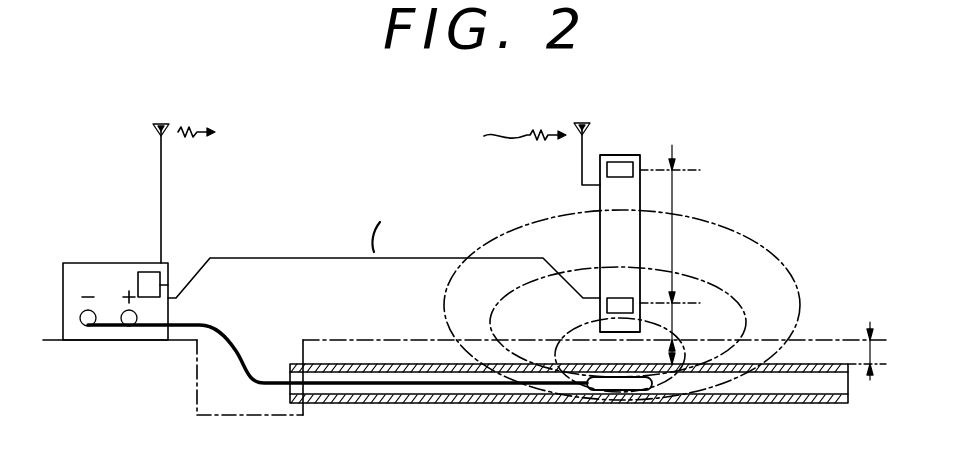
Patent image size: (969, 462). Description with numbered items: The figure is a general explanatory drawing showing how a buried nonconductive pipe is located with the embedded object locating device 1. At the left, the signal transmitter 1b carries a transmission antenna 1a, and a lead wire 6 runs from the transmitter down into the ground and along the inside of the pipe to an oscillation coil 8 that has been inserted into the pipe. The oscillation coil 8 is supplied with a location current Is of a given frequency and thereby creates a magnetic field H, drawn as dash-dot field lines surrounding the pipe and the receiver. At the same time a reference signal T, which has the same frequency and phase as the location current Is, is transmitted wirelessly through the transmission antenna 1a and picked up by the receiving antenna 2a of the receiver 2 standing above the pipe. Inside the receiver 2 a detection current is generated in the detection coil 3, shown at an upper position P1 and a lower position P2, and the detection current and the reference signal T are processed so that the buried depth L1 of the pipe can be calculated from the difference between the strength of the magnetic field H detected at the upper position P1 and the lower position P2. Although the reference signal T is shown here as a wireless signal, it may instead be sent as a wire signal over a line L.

The embedded object locating device 1 is at (116, 260).
The transmission antenna 1a is at (155, 131).
The signal transmitter 1b is at (172, 275).
The receiver 2 is at (640, 156).
The receiving antenna 2a is at (582, 118).
The detection coil 3 is at (618, 177).
The lead wire 6 is at (232, 345).
The oscillation coil 8 is at (605, 376).
The reference signal T is at (201, 128).
The magnetic field H is at (782, 262).
The upper position P1 is at (678, 167).
The lower position P2 is at (678, 303).
The depth L1 is at (867, 352).
The line L is at (388, 231).
The location current Is is at (243, 358).